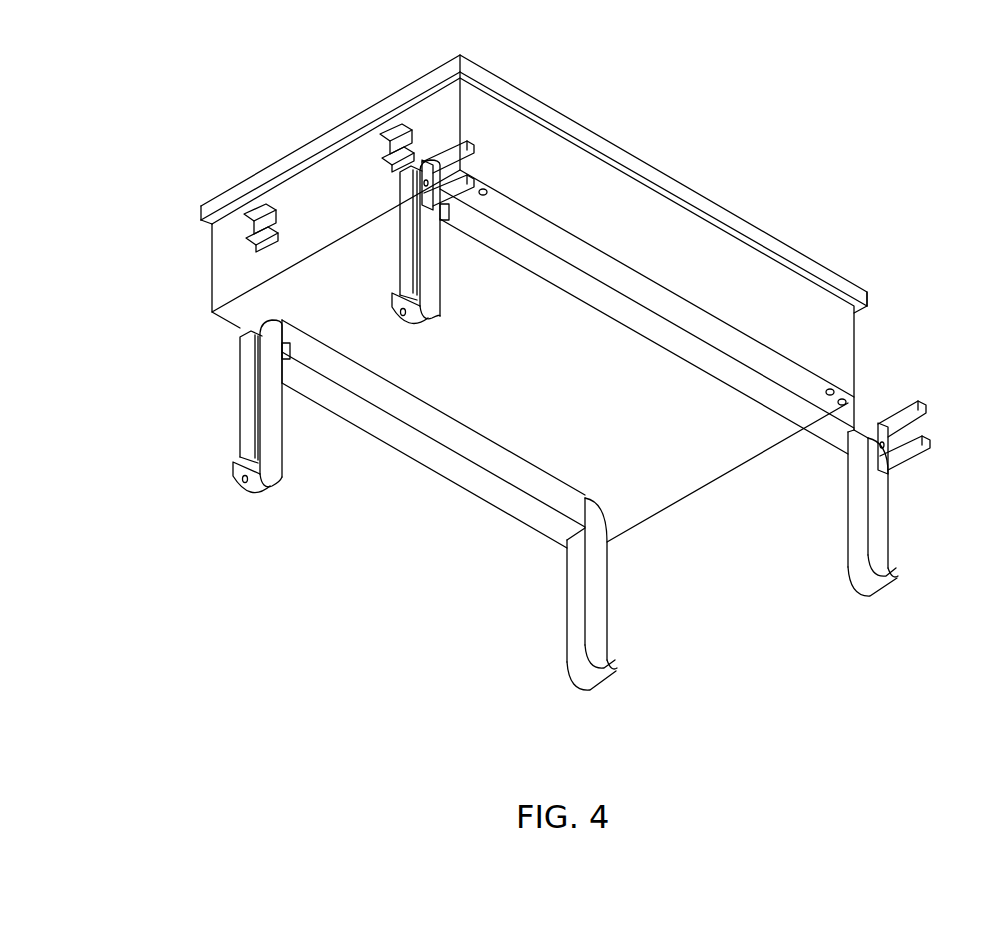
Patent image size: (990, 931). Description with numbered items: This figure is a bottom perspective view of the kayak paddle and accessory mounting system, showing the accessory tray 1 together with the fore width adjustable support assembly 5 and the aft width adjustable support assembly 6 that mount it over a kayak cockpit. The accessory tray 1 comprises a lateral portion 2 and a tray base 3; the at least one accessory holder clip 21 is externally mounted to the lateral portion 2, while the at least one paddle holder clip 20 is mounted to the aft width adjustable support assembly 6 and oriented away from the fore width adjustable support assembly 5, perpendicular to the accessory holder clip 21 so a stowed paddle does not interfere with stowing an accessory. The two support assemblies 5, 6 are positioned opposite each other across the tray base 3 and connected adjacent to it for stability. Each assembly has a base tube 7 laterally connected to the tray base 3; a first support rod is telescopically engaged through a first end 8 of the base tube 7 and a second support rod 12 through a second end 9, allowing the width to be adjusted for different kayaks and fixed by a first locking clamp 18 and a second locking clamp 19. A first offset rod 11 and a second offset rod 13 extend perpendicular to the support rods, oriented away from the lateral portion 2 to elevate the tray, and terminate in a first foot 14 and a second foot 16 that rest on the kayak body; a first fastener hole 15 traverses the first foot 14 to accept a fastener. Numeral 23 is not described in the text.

The accessory tray 1 is at (508, 298).
The lateral portion 2 is at (334, 212).
The tray base 3 is at (544, 392).
The fore width adjustable support assembly 5 is at (338, 347).
The aft width adjustable support assembly 6 is at (456, 276).
The base tube 7 is at (440, 424).
The first end 8 is at (296, 346).
The second end 9 is at (588, 500).
The first offset rod 11 is at (250, 400).
The second support rod 12 is at (846, 446).
The second offset rod 13 is at (739, 539).
The first foot 14 is at (274, 490).
The first fastener hole 15 is at (244, 484).
The second foot 16 is at (578, 676).
The first locking clamp 18 is at (488, 196).
The second locking clamp 19 is at (840, 386).
The paddle holder clip 20 is at (462, 160).
The accessory holder clip 21 is at (250, 240).
The top plate 23 is at (318, 143).